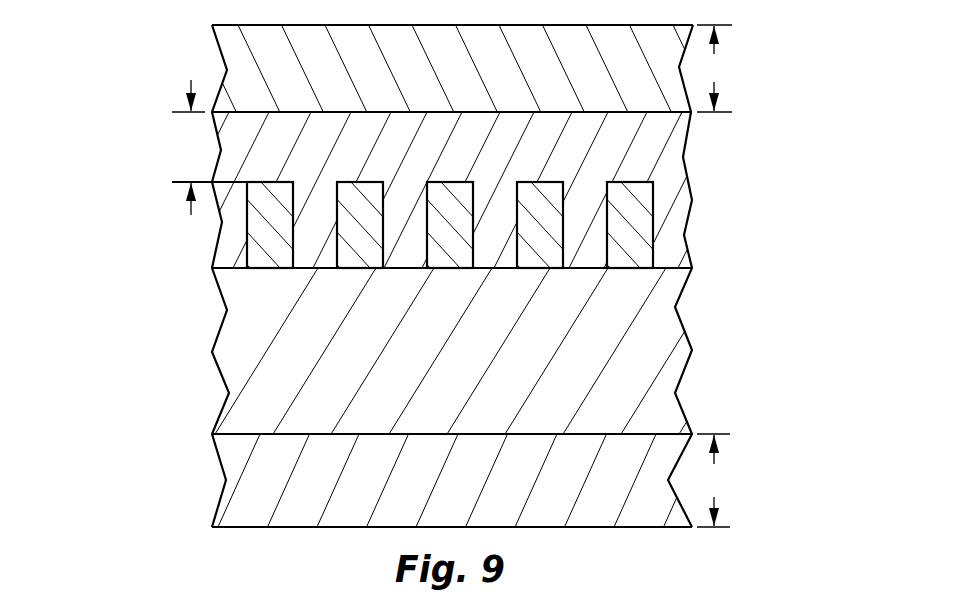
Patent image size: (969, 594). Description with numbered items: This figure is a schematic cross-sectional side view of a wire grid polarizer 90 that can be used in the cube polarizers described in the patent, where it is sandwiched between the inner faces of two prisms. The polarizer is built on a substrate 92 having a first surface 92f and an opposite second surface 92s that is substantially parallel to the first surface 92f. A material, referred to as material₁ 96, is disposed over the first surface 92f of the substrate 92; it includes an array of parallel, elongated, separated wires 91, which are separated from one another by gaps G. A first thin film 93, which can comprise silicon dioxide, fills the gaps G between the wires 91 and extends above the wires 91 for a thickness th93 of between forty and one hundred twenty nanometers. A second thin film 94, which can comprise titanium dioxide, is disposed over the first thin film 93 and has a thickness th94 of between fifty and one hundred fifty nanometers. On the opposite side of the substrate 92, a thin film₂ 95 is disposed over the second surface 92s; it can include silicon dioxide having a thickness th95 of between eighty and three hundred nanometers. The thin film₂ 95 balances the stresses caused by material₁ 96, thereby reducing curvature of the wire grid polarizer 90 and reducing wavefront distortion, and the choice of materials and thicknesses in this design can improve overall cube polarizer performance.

The wire grid polarizer 90 is at (452, 264).
The wires 91 is at (258, 234).
The substrate 92 is at (497, 351).
The first surface 92f is at (580, 268).
The second surface 92s is at (452, 405).
The first thin film 93 is at (438, 162).
The second thin film 94 is at (436, 82).
The thin film₂ 95 is at (476, 494).
The material₁ 96 is at (813, 177).
The gaps G is at (304, 234).
The thickness of first thin film above the wires th93 is at (195, 147).
The thickness of second thin film th94 is at (719, 68).
The thickness of thin film₂ th95 is at (718, 480).